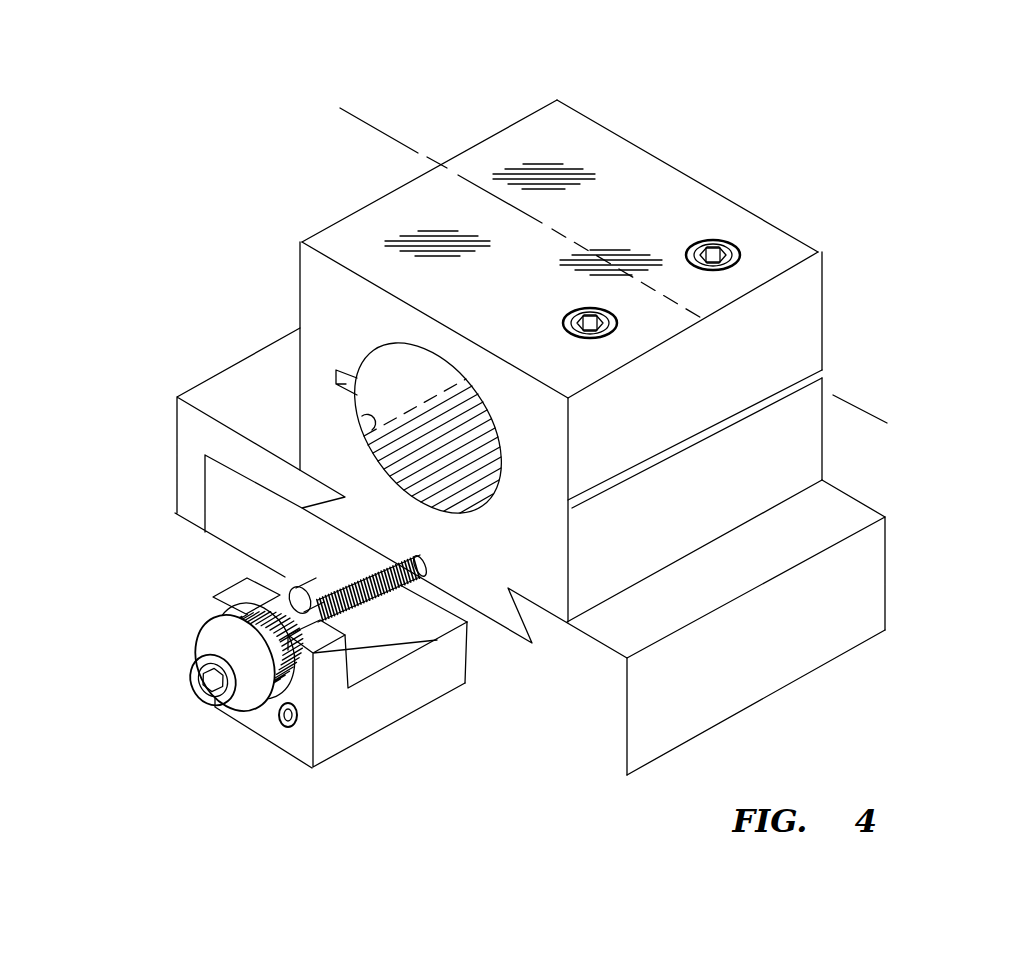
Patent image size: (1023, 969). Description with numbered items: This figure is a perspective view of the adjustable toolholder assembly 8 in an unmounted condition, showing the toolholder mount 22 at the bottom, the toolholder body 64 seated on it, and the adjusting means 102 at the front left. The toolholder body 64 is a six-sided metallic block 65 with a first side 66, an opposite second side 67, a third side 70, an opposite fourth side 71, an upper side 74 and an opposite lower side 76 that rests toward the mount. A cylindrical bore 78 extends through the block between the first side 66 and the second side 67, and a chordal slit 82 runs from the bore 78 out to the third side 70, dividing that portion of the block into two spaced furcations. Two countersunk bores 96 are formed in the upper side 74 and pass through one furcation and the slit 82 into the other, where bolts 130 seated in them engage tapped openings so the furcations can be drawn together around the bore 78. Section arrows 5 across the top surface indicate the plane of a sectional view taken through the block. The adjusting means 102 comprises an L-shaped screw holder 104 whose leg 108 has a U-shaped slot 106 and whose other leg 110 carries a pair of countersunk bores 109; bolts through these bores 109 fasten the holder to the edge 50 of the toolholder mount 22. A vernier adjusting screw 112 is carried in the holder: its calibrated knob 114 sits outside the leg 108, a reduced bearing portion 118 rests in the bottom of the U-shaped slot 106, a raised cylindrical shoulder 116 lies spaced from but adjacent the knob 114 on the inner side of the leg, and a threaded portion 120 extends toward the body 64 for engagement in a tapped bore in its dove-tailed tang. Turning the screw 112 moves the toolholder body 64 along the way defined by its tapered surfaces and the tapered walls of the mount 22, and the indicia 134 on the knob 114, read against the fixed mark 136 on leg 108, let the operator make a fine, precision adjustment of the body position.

The section line 5- 5 is at (340, 108).
The toolholder assembly 8 is at (549, 359).
The toolholder mount 22 is at (582, 581).
The edge 50 is at (577, 720).
The toolholder body 64 is at (752, 500).
The metallic block 65 is at (549, 359).
The first side 66 is at (323, 290).
The second side 67 is at (715, 190).
The third side 70 is at (707, 497).
The fourth side 71 is at (360, 207).
The upper (fifth) side 74 is at (615, 150).
The lower (sixth) side 76 is at (587, 753).
The cylindrical bore 78 is at (366, 423).
The chordal slit 82 is at (800, 372).
The countersunk bores 96 is at (740, 253).
The adjusting means 102 is at (287, 659).
The L-shaped screw holder 104 is at (340, 722).
The U-shaped slot 106 is at (240, 578).
The leg 108 is at (220, 602).
The countersunk bores 109 is at (283, 718).
The other leg 110 is at (420, 712).
The vernier adjusting screw 112 is at (178, 625).
The calibrated knob 114 is at (198, 620).
The raised cylindrical shoulder 116 is at (284, 622).
The reduced bearing portion 118 is at (285, 622).
The threaded portion 120 is at (467, 655).
The bolts 130 is at (700, 243).
The indicia 134 is at (215, 612).
The fixed mark 136 is at (348, 655).